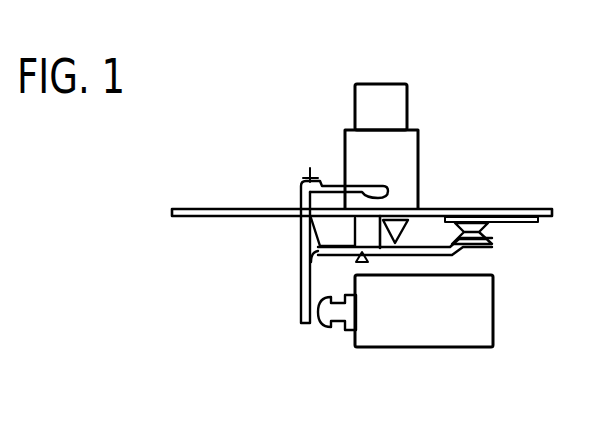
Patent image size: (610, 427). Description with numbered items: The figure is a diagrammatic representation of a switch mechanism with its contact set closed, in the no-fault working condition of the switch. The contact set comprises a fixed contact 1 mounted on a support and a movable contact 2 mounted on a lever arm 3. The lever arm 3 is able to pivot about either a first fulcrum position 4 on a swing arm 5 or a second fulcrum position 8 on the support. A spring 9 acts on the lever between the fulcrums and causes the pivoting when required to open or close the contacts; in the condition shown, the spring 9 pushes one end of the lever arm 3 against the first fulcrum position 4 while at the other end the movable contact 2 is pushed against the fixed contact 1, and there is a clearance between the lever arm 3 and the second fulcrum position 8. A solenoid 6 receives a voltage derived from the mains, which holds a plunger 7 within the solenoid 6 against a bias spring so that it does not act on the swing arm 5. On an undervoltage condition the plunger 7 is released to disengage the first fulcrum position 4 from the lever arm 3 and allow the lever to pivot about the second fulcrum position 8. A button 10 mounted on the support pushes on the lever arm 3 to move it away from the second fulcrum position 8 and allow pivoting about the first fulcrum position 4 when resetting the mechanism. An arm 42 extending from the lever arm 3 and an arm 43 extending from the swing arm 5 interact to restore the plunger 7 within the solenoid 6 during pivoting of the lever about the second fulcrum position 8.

The fixed contact 1 is at (475, 220).
The movable contact 2 is at (490, 238).
The lever arm 3 is at (413, 255).
The first fulcrum position 4 is at (313, 250).
The swing arm 5 is at (304, 240).
The solenoid 6 is at (467, 327).
The plunger 7 is at (337, 315).
The second fulcrum position 8 is at (407, 215).
The spring 9 is at (360, 263).
The button 10 is at (397, 85).
The arm 42 is at (363, 222).
The arm 43 is at (335, 183).